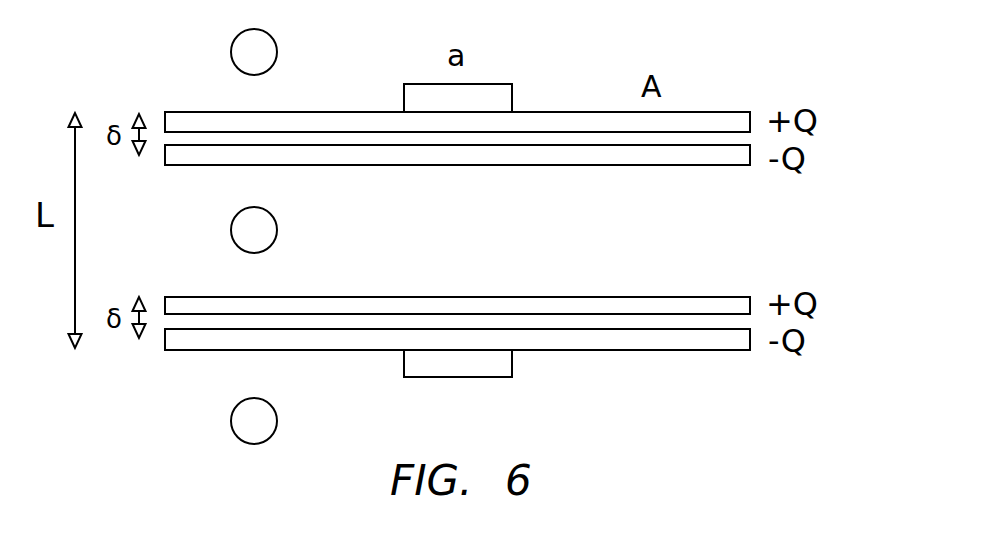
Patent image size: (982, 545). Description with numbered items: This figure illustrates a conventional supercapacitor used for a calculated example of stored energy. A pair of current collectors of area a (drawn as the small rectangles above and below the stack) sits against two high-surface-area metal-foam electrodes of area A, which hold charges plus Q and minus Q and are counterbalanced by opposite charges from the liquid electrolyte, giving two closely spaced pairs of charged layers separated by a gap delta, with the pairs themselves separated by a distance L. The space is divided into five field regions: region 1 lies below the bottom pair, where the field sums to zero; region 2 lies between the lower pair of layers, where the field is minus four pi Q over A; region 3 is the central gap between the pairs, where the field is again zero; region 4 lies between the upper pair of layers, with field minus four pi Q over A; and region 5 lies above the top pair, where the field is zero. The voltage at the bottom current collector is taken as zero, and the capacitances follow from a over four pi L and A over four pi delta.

The region 1 is at (254, 421).
The region 2 is at (457, 337).
The region 3 is at (254, 230).
The region 4 is at (457, 124).
The region 5 is at (254, 52).